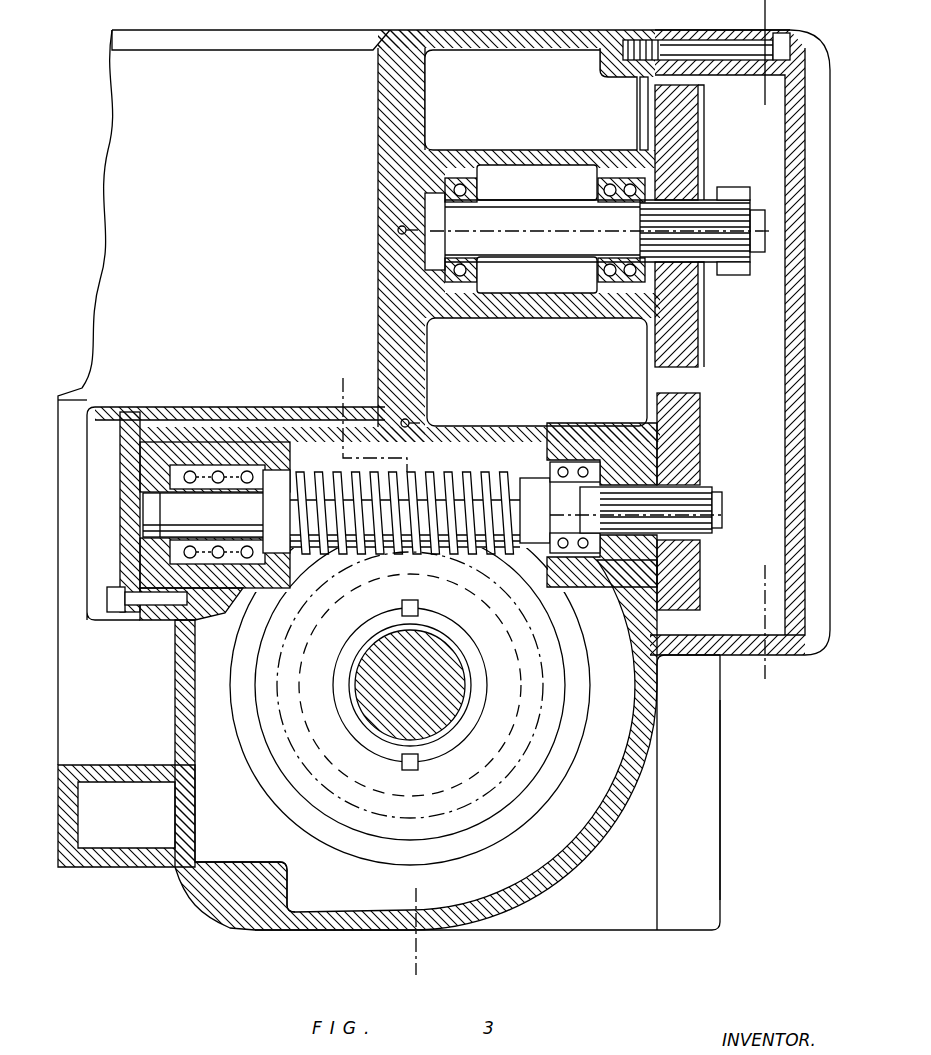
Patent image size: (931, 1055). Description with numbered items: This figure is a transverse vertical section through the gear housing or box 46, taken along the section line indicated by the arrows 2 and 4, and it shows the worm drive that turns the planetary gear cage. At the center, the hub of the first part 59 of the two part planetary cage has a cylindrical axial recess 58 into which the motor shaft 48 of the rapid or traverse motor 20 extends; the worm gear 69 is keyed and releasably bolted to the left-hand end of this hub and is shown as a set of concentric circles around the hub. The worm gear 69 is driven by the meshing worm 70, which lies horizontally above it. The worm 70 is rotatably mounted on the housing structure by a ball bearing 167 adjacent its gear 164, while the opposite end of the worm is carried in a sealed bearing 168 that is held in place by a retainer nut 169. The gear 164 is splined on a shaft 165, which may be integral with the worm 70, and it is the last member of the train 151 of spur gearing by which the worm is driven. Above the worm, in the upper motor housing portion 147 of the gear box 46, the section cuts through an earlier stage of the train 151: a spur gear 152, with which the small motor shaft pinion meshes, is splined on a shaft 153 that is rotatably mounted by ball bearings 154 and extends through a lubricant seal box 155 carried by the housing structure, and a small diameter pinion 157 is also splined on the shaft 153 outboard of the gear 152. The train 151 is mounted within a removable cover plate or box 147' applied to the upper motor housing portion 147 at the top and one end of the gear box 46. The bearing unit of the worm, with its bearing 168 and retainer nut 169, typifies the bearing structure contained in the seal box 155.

The upper motor housing portion 147 is at (424, 480).
The removable cover plate or box 147' is at (715, 362).
The spur gear 152 is at (706, 330).
The shaft 153 is at (718, 218).
The ball bearings 154 is at (460, 184).
The lubricant seal box 155 is at (538, 178).
The small diameter pinion 157 is at (740, 272).
The gear 164 is at (700, 583).
The shaft 165 is at (724, 516).
The ball bearing 167 is at (574, 466).
The sealed bearing 168 is at (221, 486).
The retainer nut 169 is at (507, 487).
The worm 70 is at (447, 479).
The train of spur gearing 151 is at (745, 490).
The rapid or traverse motor 20 is at (425, 698).
The cylindrical axial recess 58 is at (465, 684).
The first part of planetary gear cage 59 is at (466, 650).
The motor shaft 48 is at (440, 720).
The worm gear 69 is at (443, 826).
The gear housing or box 46 is at (737, 859).
The section line 2- 2 is at (343, 381).
The section line 4- 4 is at (797, 12).